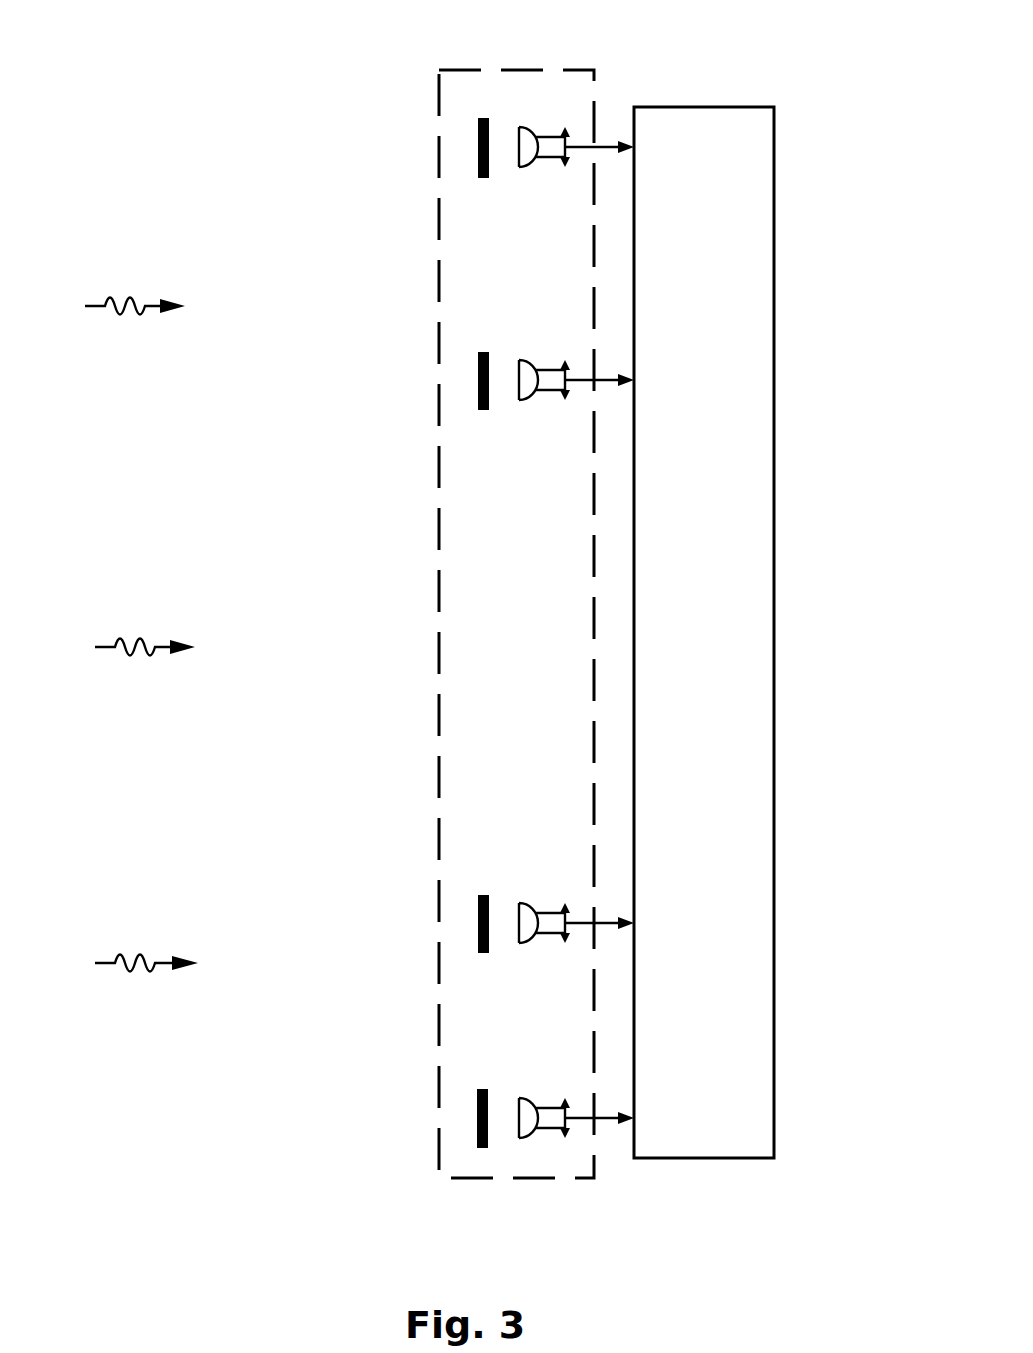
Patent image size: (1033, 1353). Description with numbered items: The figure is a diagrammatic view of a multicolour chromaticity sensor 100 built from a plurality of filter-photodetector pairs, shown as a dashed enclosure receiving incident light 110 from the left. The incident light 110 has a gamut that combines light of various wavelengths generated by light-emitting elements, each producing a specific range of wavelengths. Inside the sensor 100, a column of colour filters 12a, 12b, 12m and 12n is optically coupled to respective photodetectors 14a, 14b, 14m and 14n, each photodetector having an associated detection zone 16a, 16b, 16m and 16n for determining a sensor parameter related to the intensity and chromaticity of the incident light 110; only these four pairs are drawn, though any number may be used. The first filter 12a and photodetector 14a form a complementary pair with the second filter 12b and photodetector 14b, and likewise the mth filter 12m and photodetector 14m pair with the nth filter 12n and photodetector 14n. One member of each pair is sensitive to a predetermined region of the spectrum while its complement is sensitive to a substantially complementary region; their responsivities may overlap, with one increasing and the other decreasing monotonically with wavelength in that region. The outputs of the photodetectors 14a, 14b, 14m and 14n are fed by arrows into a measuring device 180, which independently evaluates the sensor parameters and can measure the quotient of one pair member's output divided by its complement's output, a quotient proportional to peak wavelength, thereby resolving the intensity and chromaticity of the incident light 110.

The multicolour chromaticity sensor 100 is at (405, 70).
The incident light 110 is at (130, 298).
The first filter 12a is at (484, 118).
The second filter 12b is at (486, 410).
The mth filter 12m is at (486, 895).
The nth filter 12n is at (483, 1148).
The photodetector 14a is at (522, 128).
The photodetector 14b is at (522, 398).
The photodetector 14m is at (522, 905).
The photodetector 14n is at (522, 1136).
The detection zone 16a is at (528, 165).
The detection zone 16b is at (520, 372).
The detection zone 16m is at (526, 942).
The detection zone 16n is at (520, 1105).
The measuring device 180 is at (700, 1158).